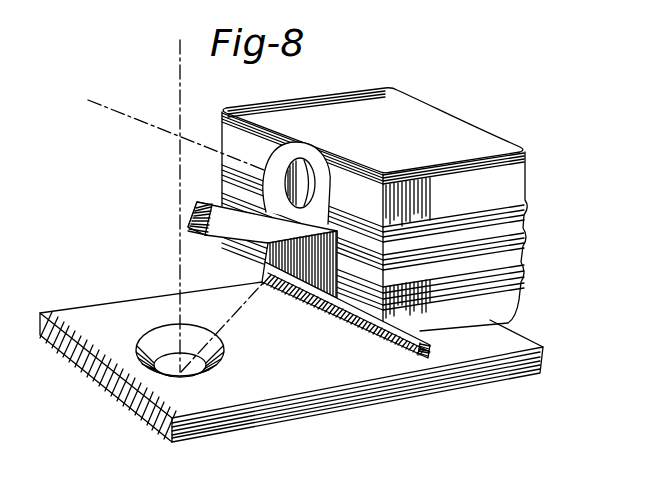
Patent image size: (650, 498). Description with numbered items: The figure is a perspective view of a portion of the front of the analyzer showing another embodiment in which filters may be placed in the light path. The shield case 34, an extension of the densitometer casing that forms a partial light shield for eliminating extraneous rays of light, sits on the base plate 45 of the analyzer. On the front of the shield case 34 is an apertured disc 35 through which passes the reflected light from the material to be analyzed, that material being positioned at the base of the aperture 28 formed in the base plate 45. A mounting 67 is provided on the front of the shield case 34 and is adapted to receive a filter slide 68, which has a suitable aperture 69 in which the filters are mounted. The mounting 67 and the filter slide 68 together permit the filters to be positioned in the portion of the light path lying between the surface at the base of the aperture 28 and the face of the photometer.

The aperture 28 is at (226, 351).
The light shield 34 is at (455, 125).
The apertured disc 35 is at (300, 149).
The base plate 45 is at (403, 395).
The mounting 67 is at (202, 200).
The filter slide 68 is at (432, 350).
The aperture 69 is at (352, 318).